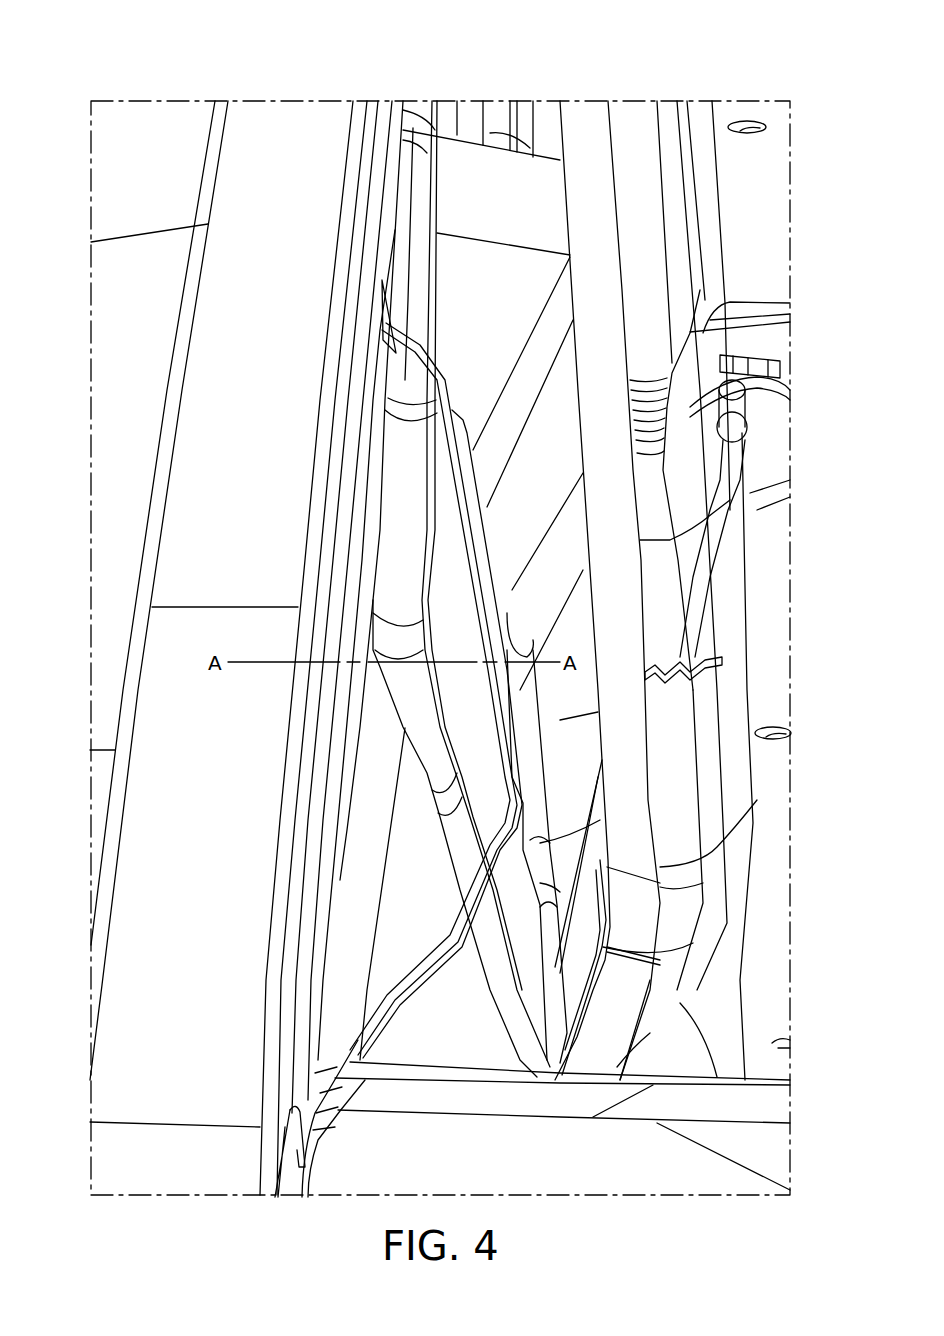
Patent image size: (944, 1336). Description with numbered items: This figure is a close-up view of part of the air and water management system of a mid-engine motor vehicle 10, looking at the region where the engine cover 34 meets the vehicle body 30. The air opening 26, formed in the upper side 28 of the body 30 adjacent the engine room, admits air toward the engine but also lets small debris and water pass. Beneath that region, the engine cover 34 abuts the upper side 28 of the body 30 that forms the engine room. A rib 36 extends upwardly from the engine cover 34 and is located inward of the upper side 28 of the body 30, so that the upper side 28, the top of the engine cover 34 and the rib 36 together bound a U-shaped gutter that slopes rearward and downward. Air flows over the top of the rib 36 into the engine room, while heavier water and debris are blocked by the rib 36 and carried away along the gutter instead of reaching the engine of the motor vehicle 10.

The motor vehicle 10 is at (161, 72).
The air opening 26 is at (378, 537).
The upper side 28 is at (168, 1018).
The body 30 is at (113, 832).
The engine cover 34 is at (633, 930).
The rib 36 is at (510, 590).